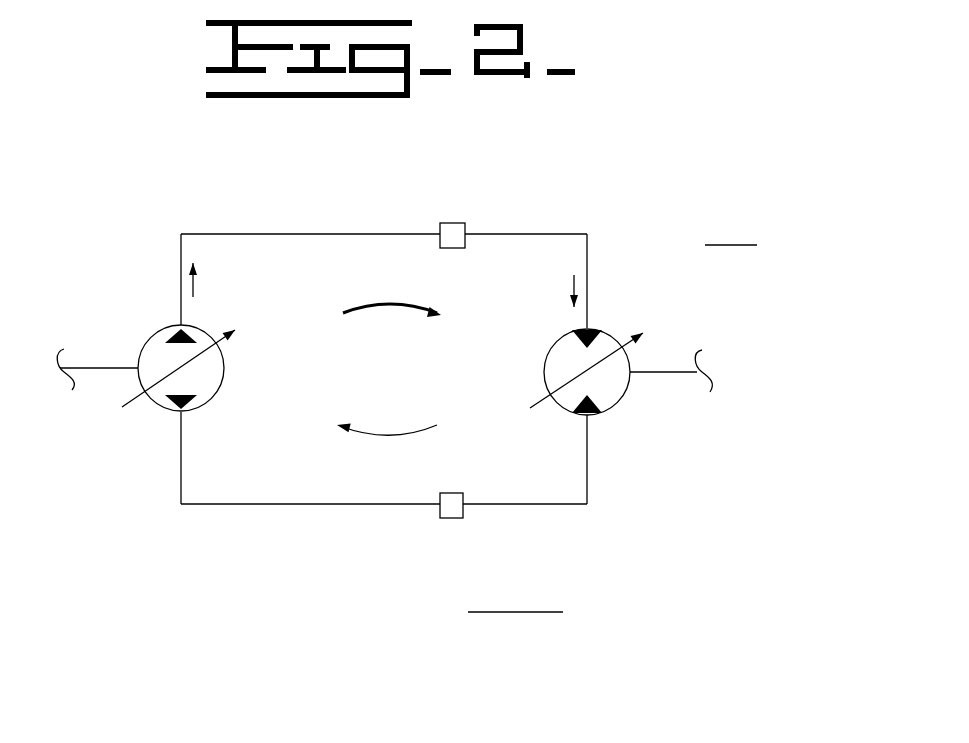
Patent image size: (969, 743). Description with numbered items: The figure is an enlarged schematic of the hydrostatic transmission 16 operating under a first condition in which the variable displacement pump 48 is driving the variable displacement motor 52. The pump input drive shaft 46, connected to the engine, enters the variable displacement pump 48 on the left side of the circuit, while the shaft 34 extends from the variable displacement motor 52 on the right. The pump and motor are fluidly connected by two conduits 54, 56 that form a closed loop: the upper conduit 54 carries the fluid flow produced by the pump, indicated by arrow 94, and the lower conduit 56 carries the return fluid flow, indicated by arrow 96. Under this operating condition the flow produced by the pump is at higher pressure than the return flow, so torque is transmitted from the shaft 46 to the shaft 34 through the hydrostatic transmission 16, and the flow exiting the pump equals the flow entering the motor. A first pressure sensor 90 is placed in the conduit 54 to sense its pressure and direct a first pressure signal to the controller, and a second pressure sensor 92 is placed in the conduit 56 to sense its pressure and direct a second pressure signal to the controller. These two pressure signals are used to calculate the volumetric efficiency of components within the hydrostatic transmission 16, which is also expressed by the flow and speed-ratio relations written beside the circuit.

The hydrostatic transmission 16 is at (122, 212).
The shaft 34 is at (665, 372).
The pump input drive shaft 46 is at (113, 367).
The variable displacement pump 48 is at (152, 403).
The variable displacement motor 52 is at (623, 398).
The conduit 54 is at (317, 234).
The conduit 56 is at (253, 504).
The first pressure sensor 90 is at (465, 228).
The second pressure sensor 92 is at (437, 518).
The arrow 94 is at (373, 307).
The arrow 96 is at (400, 433).